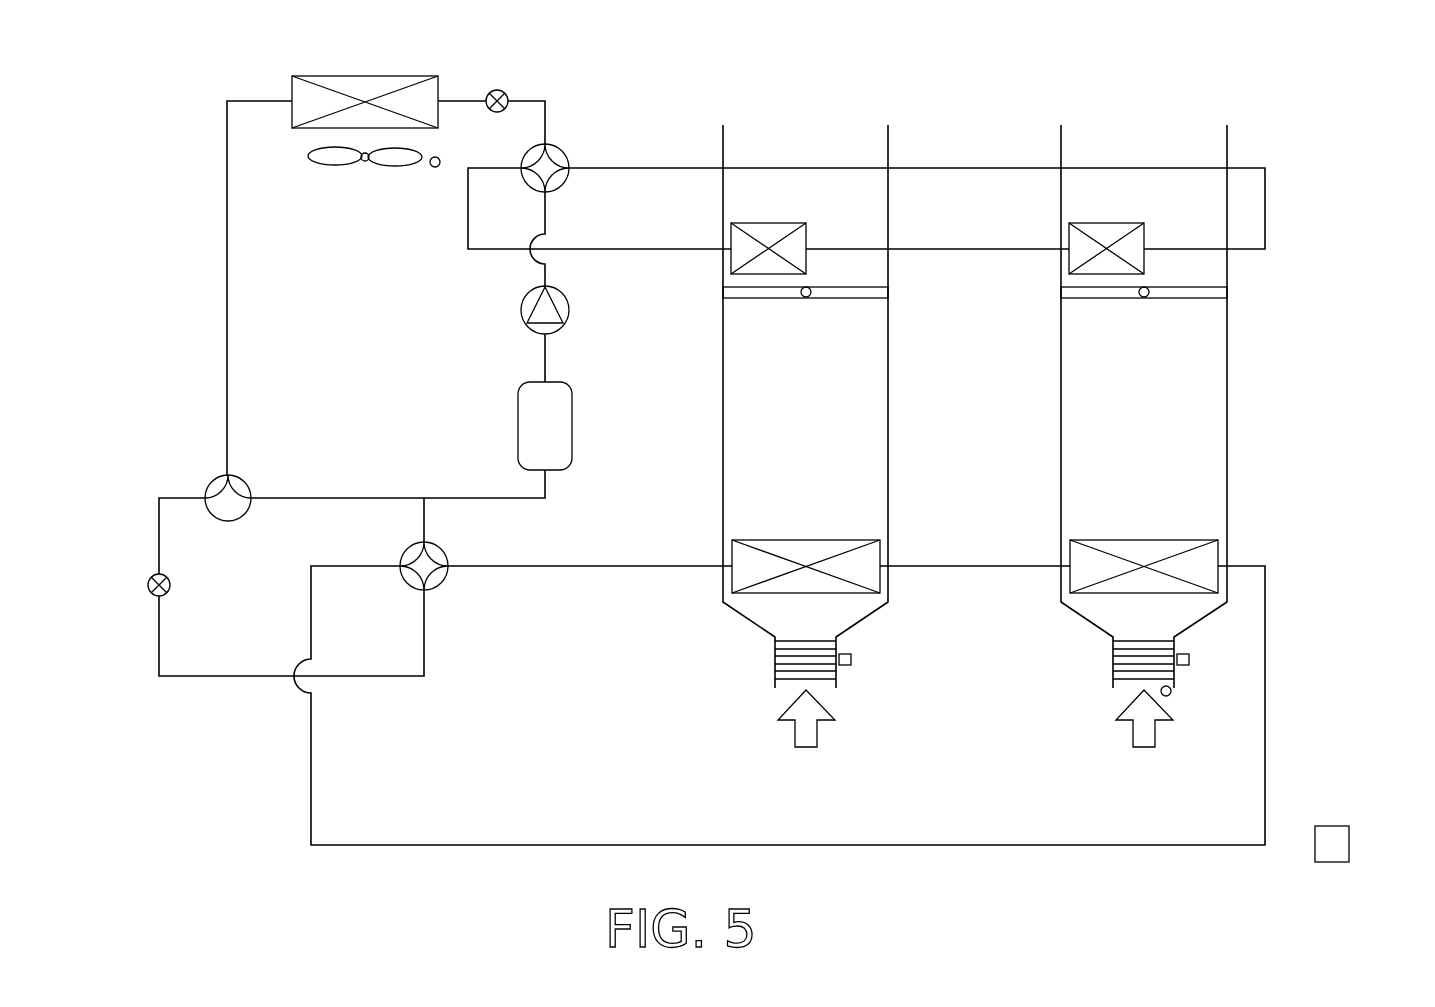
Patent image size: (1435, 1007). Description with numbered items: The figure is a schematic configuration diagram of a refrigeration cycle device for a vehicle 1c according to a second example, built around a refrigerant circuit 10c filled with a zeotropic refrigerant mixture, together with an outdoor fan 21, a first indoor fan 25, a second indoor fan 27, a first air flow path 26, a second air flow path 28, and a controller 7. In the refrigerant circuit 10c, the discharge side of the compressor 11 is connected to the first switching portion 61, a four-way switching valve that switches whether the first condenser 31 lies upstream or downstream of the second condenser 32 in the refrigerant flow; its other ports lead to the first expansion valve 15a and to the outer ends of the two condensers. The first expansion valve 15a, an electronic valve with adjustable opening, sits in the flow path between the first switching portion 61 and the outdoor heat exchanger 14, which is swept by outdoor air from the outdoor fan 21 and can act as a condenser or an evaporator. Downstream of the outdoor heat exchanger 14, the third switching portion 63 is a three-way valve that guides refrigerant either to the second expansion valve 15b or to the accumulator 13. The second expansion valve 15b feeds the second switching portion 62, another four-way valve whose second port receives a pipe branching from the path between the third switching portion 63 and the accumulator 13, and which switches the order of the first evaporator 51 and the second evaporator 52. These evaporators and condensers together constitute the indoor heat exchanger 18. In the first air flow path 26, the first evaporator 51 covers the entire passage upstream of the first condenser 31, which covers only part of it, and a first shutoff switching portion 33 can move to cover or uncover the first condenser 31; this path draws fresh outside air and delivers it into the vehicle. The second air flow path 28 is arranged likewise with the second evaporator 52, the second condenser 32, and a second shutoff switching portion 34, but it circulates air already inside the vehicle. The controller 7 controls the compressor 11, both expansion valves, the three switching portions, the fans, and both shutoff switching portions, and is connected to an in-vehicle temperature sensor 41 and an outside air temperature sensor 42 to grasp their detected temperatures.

The refrigeration cycle device for a vehicle 1c is at (180, 125).
The refrigerant circuit 10c is at (218, 295).
The outdoor heat exchanger 14 is at (405, 76).
The first expansion valve 15a is at (497, 90).
The second expansion valve 15b is at (148, 585).
The outdoor fan 21 is at (389, 168).
The outside air temperature sensor 42 is at (435, 167).
The first switching portion 61 is at (563, 151).
The second switching portion 62 is at (441, 549).
The third switching portion 63 is at (244, 481).
The compressor 11 is at (569, 310).
The accumulator 13 is at (572, 424).
The indoor heat exchanger 18 is at (1305, 567).
The first air flow path 26 is at (892, 457).
The second air flow path 28 is at (1231, 457).
The first condenser 31 is at (766, 223).
The second condenser 32 is at (1104, 223).
The first shutoff switching portion 33 is at (773, 298).
The second shutoff switching portion 34 is at (1110, 298).
The first evaporator 51 is at (845, 540).
The second evaporator 52 is at (1183, 540).
The first indoor fan 25 is at (838, 641).
The second indoor fan 27 is at (1176, 641).
The in-vehicle temperature sensor 41 is at (1171, 691).
The controller 7 is at (1349, 843).